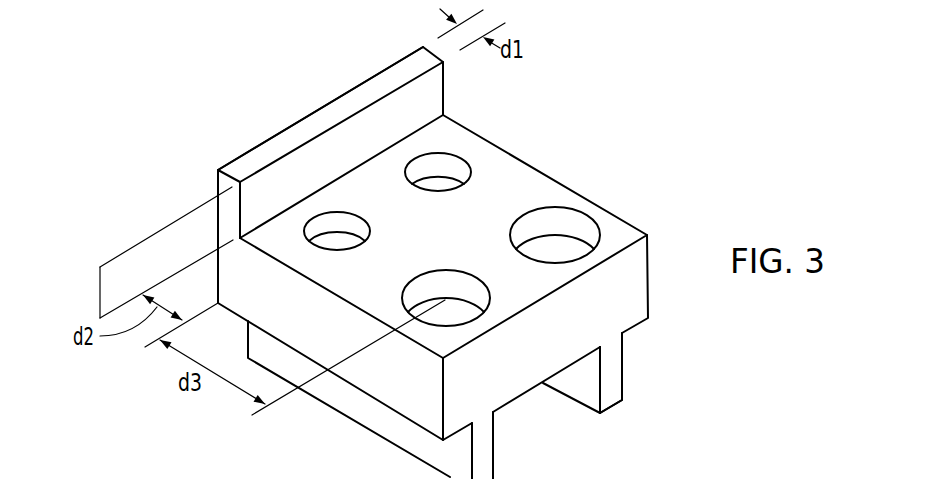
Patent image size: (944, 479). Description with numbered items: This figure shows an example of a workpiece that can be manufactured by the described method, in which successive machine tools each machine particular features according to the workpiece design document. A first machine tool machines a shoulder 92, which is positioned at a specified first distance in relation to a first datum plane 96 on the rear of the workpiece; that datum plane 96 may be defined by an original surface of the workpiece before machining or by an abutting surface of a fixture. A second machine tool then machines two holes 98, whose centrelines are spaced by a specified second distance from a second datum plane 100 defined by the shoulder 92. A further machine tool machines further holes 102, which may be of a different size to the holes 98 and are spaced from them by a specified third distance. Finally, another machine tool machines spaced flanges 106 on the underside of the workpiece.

The shoulder 92 is at (433, 96).
The first datum plane 96 is at (281, 117).
The holes 98 is at (460, 165).
The second datum plane 100 is at (166, 240).
The further holes 102 is at (583, 228).
The spaced flanges 106 is at (601, 417).